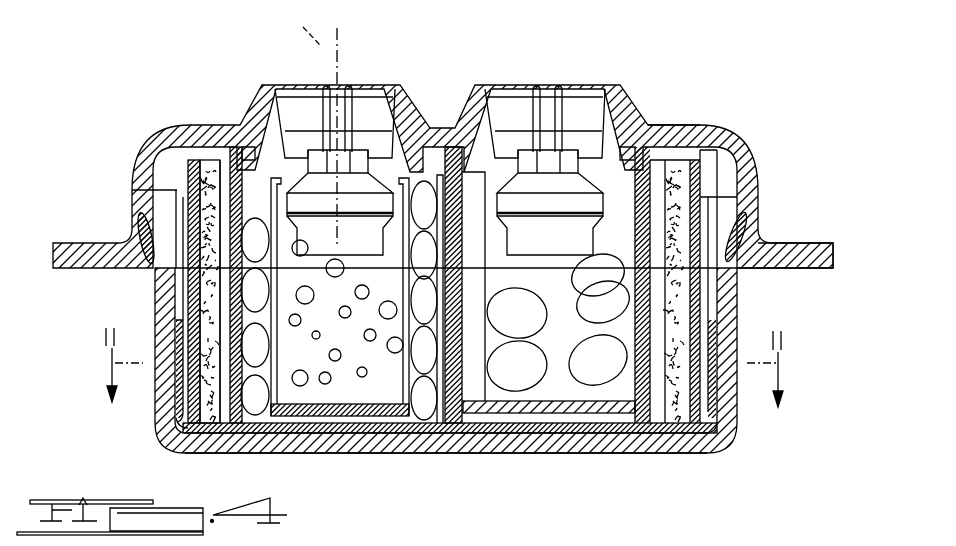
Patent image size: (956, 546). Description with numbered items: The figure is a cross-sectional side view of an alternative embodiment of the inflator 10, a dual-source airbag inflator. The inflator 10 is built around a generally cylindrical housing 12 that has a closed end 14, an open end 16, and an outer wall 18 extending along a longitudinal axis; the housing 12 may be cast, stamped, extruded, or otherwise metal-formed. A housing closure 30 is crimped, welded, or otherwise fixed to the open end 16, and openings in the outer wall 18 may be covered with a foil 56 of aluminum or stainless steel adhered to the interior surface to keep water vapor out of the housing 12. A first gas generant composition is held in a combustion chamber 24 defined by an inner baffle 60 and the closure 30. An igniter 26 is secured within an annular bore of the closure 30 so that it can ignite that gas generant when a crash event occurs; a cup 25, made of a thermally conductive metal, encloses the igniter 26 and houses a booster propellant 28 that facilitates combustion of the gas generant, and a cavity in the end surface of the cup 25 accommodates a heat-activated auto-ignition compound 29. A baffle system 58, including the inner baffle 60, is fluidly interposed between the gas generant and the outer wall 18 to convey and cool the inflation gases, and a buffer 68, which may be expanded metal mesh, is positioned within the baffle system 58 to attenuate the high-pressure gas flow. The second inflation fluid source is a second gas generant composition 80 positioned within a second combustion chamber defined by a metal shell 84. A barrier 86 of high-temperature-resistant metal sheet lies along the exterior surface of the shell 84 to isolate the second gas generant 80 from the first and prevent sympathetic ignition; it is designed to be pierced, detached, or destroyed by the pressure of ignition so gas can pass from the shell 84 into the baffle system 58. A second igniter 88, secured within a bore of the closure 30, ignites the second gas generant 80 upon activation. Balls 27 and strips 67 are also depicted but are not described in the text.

The inflator 10 is at (478, 273).
The housing 12 is at (605, 455).
The closed end 14 is at (738, 445).
The open end 16 is at (478, 273).
The outer wall 18 is at (724, 293).
The combustion chamber 24 is at (187, 127).
The cup 25 is at (268, 395).
The igniter 26 is at (318, 112).
The balls 27 is at (430, 265).
The booster propellant 28 is at (329, 376).
The auto-ignition compound 29 is at (316, 433).
The housing closure 30 is at (656, 130).
The foil 56 is at (176, 323).
The baffle system 58 is at (183, 428).
The inner baffle 60 is at (236, 147).
The outer liner strip 67 is at (188, 192).
The buffer 68 is at (200, 175).
The second gas generant composition 80 is at (553, 388).
The shell 84 is at (457, 416).
The barrier 86 is at (439, 388).
The second igniter 88 is at (566, 100).